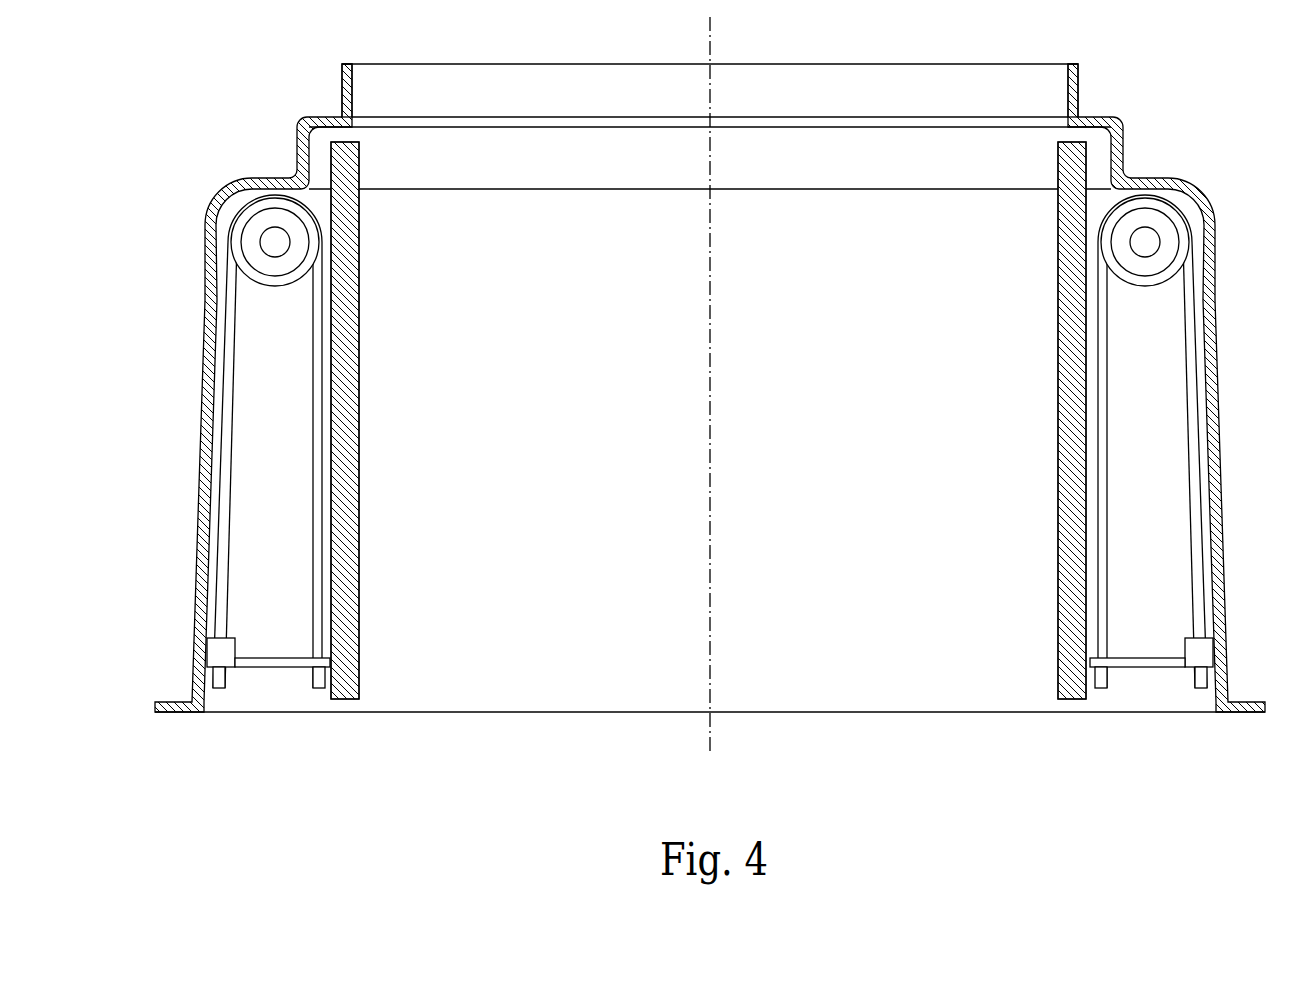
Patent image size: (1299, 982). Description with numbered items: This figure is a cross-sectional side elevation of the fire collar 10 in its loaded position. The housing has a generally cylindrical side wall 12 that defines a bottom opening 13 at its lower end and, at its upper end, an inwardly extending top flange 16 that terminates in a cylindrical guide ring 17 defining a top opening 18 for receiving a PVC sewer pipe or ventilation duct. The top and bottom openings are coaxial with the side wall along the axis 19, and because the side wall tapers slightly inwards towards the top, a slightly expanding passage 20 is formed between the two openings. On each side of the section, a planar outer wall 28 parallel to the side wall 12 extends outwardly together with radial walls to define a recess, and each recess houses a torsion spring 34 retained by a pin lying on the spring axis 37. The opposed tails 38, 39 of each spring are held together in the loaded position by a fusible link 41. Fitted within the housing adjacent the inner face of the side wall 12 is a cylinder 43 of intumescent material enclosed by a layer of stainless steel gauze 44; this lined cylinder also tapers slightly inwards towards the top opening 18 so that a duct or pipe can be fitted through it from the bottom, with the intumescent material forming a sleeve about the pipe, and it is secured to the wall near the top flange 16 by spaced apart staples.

The fire collar 10 is at (713, 386).
The side wall 12 is at (713, 388).
The bottom opening 13 is at (587, 713).
The top flange 16 is at (1107, 123).
The guide ring 17 is at (1075, 82).
The top opening 18 is at (945, 64).
The axis 19 is at (710, 33).
The passage 20 is at (718, 218).
The outer wall 28 is at (203, 392).
The torsion spring 34 is at (247, 213).
The spring axis 37 is at (277, 242).
The spring tail 38 is at (223, 580).
The spring tail 39 is at (320, 503).
The fusible link 41 is at (255, 663).
The intumescent cylinder 43 is at (348, 688).
The stainless steel gauze 44 is at (332, 688).